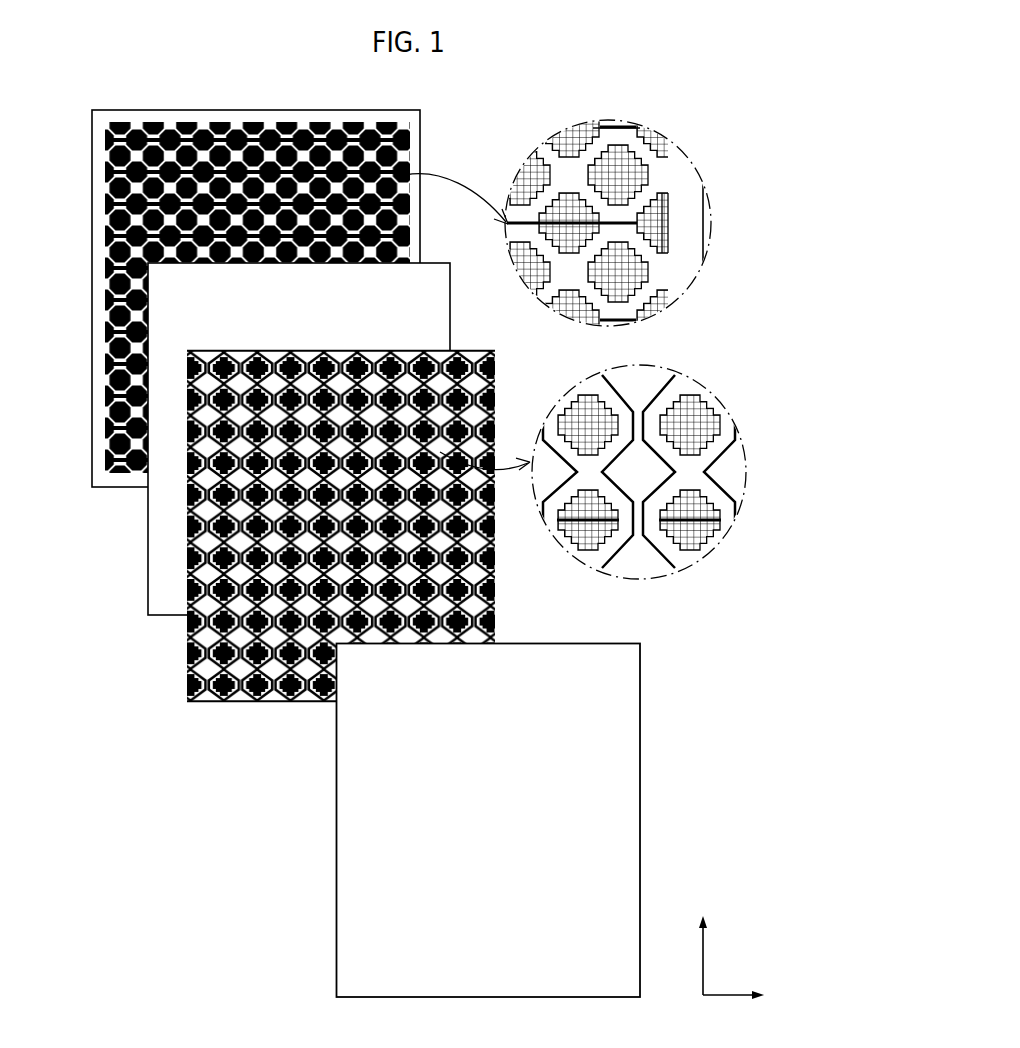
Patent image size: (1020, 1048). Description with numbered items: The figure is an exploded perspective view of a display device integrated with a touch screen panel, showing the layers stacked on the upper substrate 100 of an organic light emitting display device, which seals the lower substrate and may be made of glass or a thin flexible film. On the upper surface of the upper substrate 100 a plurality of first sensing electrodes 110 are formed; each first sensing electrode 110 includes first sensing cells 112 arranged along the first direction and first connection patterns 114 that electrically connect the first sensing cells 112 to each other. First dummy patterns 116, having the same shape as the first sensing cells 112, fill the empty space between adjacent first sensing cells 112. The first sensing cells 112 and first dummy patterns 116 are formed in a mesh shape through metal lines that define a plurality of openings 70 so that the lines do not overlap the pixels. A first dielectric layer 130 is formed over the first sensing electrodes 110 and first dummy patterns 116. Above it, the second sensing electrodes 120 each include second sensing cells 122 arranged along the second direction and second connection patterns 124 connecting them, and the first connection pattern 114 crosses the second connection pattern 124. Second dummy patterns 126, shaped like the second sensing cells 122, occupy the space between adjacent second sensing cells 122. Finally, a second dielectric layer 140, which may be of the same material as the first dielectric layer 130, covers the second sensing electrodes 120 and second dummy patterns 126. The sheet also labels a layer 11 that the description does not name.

The upper substrate 100 is at (92, 280).
The window substrate 11 is at (421, 134).
The openings 70 is at (624, 128).
The first sensing electrode 110 is at (598, 223).
The first sensing cell 112 is at (648, 232).
The first connection pattern 114 is at (628, 214).
The first dummy pattern 116 is at (637, 158).
The second sensing electrode 120 is at (506, 526).
The second sensing cell 122 is at (665, 473).
The second connection pattern 124 is at (655, 515).
The second dummy pattern 126 is at (706, 410).
The first dielectric layer 130 is at (149, 597).
The second dielectric layer 140 is at (641, 719).